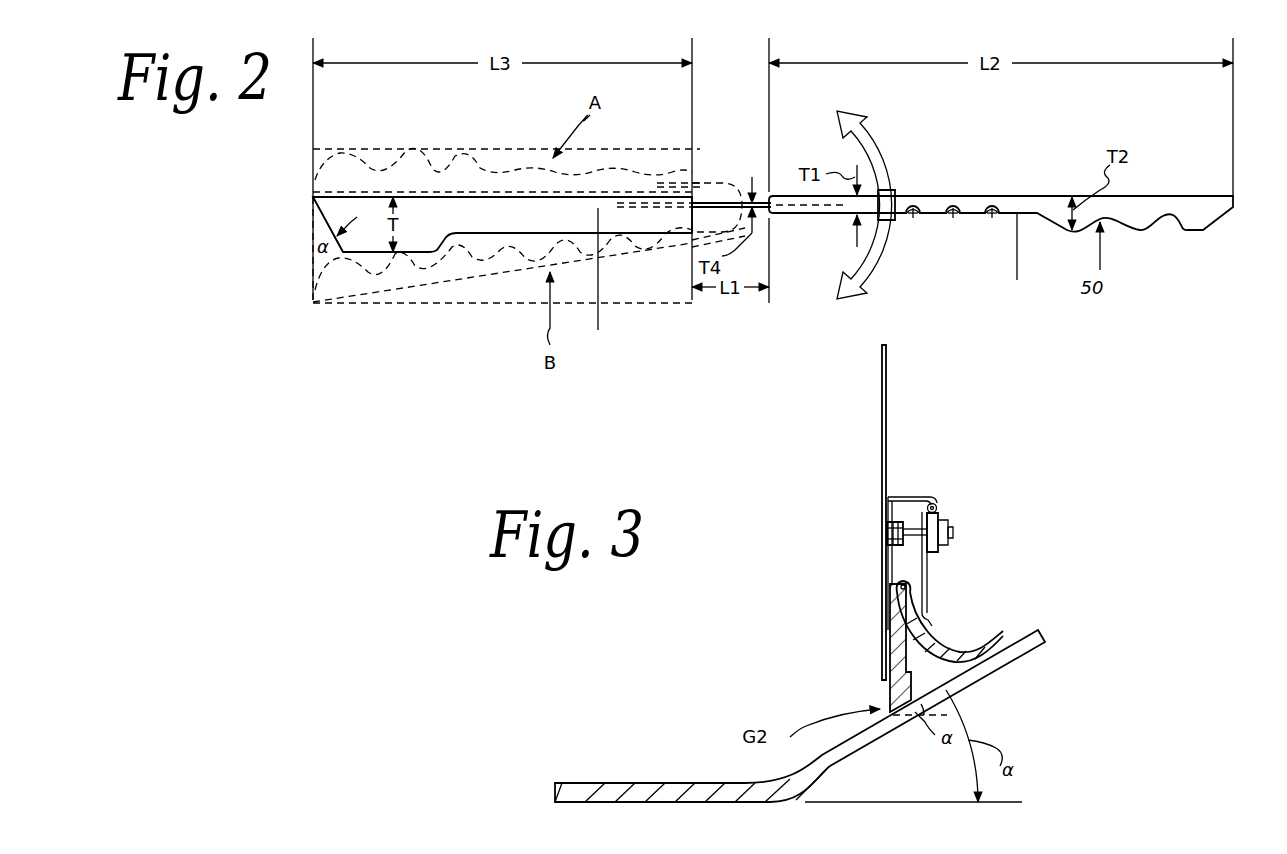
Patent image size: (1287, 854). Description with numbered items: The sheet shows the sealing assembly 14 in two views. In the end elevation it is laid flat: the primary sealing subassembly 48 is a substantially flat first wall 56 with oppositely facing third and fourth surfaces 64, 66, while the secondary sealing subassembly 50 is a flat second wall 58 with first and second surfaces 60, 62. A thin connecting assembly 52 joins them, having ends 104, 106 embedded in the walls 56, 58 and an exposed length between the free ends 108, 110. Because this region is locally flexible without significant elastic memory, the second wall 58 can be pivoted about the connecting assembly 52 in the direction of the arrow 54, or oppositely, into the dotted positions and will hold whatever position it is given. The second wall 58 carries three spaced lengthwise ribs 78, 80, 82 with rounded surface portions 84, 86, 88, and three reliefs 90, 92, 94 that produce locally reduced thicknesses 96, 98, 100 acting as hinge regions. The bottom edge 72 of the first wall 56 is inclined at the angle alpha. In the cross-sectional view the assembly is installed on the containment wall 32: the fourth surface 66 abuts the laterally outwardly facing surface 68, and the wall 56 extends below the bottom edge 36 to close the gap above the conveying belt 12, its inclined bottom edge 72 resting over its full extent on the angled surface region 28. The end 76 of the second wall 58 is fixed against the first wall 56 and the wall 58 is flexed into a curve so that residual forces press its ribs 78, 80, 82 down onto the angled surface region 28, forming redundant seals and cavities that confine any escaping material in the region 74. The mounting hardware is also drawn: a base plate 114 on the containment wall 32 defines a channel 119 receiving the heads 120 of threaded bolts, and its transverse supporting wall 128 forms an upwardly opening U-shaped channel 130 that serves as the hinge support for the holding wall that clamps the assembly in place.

In FIG. 3, the conveying belt 12 is at (640, 785).
In FIG. 2, the sealing assembly 14 is at (722, 312).
In FIG. 3, the angled surface region 28 is at (1020, 640).
In FIG. 3, the containment wall 32 is at (880, 372).
In FIG. 3, the bottom edge 36 is at (878, 682).
In FIG. 2, the primary sealing subassembly 48 is at (486, 222).
In FIG. 2, the secondary sealing subassembly 50 is at (376, 170).
In FIG. 3, the secondary sealing subassembly 50 is at (948, 652).
In FIG. 2, the connecting assembly 52 is at (717, 212).
In FIG. 3, the connecting assembly 52 is at (918, 580).
In FIG. 2, the arrow 54 is at (856, 118).
In FIG. 2, the first wall 56 is at (598, 330).
In FIG. 3, the first wall 56 is at (898, 614).
In FIG. 2, the second wall 58 is at (1145, 222).
In FIG. 3, the second wall 58 is at (935, 677).
In FIG. 2, the first surface 60 is at (1017, 280).
In FIG. 2, the second surface 62 is at (1018, 196).
In FIG. 2, the third surface 64 is at (407, 254).
In FIG. 2, the fourth surface 66 is at (463, 195).
In FIG. 3, the fourth surface 66 is at (884, 702).
In FIG. 3, the laterally outwardly facing surface 68 is at (887, 365).
In FIG. 2, the bottom edge 72 is at (312, 240).
In FIG. 3, the bottom edge 72 is at (892, 722).
In FIG. 3, the region 74 is at (997, 688).
In FIG. 2, the end 76 is at (773, 195).
In FIG. 2, the rib 78 is at (1200, 232).
In FIG. 2, the rib 80 is at (1130, 230).
In FIG. 2, the rib 82 is at (1067, 230).
In FIG. 2, the rounded surface portion 84 is at (1190, 231).
In FIG. 2, the rounded surface portion 86 is at (1120, 228).
In FIG. 2, the rounded surface portion 88 is at (1058, 230).
In FIG. 2, the relief 90 is at (992, 218).
In FIG. 2, the relief 92 is at (953, 218).
In FIG. 2, the relief 94 is at (910, 218).
In FIG. 2, the locally reduced thickness 96 is at (991, 196).
In FIG. 2, the locally reduced thickness 98 is at (953, 196).
In FIG. 2, the locally reduced thickness 100 is at (909, 196).
In FIG. 2, the end 104 is at (652, 205).
In FIG. 2, the end 106 is at (813, 205).
In FIG. 2, the free end 108 is at (712, 204).
In FIG. 2, the free end 110 is at (758, 190).
In FIG. 3, the base plate 114 is at (935, 515).
In FIG. 3, the channel 119 is at (887, 528).
In FIG. 3, the head 120 is at (887, 540).
In FIG. 3, the transverse supporting wall 128 is at (892, 498).
In FIG. 3, the U-shaped channel 130 is at (940, 510).